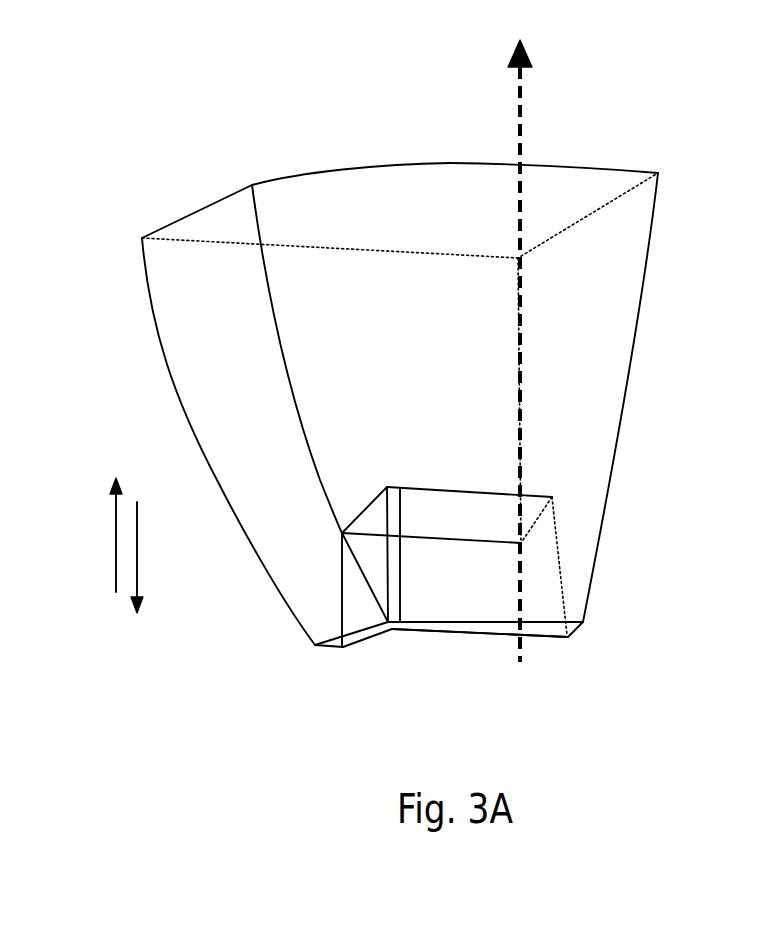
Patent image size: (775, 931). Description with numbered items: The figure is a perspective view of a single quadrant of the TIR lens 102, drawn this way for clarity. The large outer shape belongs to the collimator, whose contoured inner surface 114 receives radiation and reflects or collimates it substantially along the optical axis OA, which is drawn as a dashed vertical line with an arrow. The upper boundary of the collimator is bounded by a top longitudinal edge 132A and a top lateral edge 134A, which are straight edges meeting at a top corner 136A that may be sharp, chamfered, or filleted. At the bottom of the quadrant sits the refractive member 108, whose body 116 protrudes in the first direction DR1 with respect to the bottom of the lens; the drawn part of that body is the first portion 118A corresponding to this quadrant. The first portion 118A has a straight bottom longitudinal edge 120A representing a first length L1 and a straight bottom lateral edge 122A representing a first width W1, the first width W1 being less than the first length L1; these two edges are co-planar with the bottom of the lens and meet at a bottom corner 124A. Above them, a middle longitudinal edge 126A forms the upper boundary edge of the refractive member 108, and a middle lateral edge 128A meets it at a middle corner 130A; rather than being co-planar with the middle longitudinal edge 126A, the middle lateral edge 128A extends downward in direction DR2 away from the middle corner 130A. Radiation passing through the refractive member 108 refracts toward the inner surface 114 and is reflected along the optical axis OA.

The TIR lens 102 is at (384, 359).
The top longitudinal edge 132A is at (187, 212).
The top corner 136A is at (303, 172).
The top lateral edge 134A is at (533, 167).
The inner surface 114 is at (247, 362).
The middle lateral edge 128A is at (362, 512).
The middle corner 130A is at (388, 487).
The middle longitudinal edge 126A is at (450, 487).
The refractive member 108 is at (547, 564).
The body 116 is at (547, 564).
The first portion 118A is at (547, 564).
The bottom corner 124A is at (395, 628).
The bottom longitudinal edge 120A is at (494, 653).
The first length L1 is at (480, 632).
The bottom lateral edge 122A is at (411, 663).
The first width W1 is at (353, 648).
The optical axis OA is at (518, 118).
The first direction DR1 is at (116, 518).
The direction DR2 is at (140, 576).